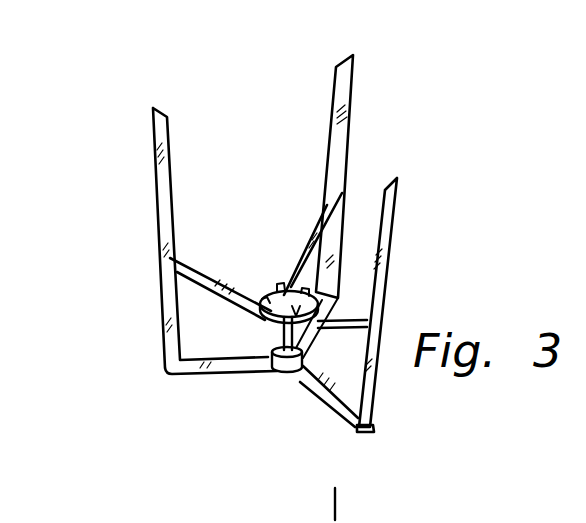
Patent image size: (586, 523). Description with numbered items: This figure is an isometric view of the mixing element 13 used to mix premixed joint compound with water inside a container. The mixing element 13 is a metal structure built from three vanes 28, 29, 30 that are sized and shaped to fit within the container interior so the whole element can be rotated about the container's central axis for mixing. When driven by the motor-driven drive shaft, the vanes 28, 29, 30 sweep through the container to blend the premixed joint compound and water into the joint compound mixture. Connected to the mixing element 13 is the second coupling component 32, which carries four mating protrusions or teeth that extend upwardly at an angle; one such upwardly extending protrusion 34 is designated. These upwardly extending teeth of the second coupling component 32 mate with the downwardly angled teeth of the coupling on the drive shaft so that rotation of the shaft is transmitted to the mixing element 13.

The mixing element 13 is at (152, 111).
The vane 28 is at (160, 247).
The vane 29 is at (353, 112).
The vane 30 is at (386, 286).
The second coupling component 32 is at (262, 335).
The upwardly extending protrusion 34 is at (304, 373).